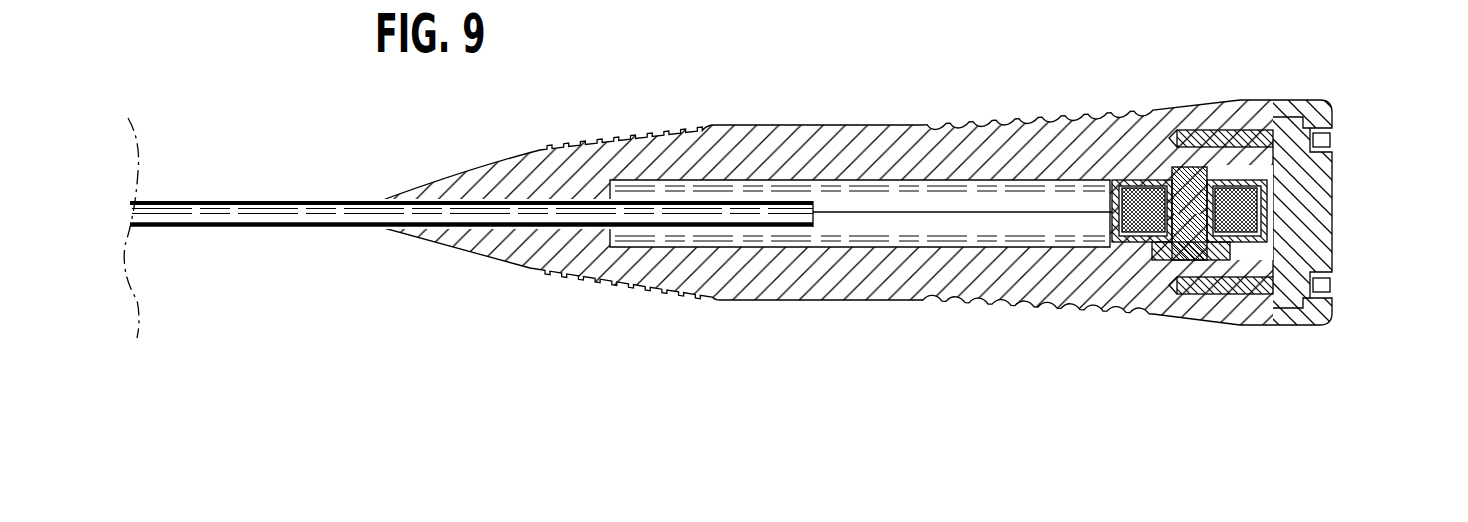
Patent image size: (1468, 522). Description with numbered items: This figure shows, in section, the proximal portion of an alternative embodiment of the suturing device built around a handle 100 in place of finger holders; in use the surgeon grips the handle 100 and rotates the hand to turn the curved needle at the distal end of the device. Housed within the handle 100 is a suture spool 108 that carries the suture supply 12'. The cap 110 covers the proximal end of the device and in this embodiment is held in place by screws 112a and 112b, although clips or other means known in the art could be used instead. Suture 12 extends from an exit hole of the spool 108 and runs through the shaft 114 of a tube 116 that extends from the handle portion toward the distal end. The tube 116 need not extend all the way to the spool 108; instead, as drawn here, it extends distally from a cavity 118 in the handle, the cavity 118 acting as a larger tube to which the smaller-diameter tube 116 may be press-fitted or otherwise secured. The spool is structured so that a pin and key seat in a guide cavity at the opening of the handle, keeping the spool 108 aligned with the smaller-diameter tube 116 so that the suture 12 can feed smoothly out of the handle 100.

The handle 100 is at (768, 92).
The suture 12 is at (618, 247).
The suture supply 12' is at (1186, 292).
The suture spool 108 is at (1190, 250).
The cap 110 is at (1334, 215).
The screw 112a is at (1340, 140).
The screw 112b is at (1340, 283).
The shaft 114 is at (258, 205).
The tube 116 is at (468, 228).
The cavity 118 is at (855, 190).